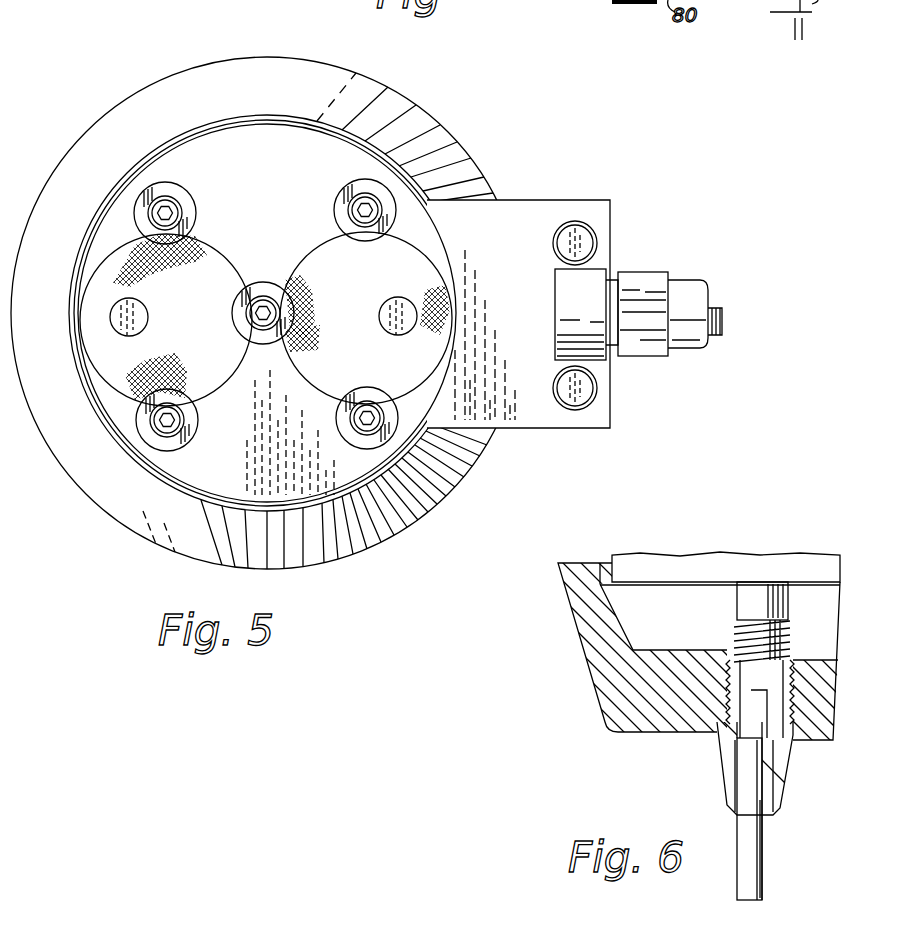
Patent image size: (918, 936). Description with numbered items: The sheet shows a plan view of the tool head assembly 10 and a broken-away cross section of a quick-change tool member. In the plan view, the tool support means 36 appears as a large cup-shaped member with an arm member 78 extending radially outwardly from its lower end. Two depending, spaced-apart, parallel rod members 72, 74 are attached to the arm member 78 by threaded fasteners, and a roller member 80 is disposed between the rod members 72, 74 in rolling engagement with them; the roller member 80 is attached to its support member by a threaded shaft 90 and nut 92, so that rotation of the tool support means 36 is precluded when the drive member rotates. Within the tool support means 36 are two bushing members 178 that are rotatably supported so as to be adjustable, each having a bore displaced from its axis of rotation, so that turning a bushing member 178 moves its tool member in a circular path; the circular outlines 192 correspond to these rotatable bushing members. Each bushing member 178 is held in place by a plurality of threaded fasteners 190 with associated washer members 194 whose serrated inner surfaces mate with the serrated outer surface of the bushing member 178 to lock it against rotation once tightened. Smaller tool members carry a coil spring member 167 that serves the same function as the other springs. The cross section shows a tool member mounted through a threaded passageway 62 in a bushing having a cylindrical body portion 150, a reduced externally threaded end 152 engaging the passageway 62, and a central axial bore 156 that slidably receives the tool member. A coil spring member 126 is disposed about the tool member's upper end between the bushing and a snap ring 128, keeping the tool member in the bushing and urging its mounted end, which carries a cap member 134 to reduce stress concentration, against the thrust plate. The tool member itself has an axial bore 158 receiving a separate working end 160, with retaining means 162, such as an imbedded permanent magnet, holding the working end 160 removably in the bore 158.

In FIG. 5, the tool head assembly 10 is at (205, 56).
In FIG. 5, the tool support means 36 is at (80, 130).
In FIG. 5, the arm member 78 is at (520, 228).
In FIG. 5, the rod member 72 is at (590, 242).
In FIG. 5, the rod member 74 is at (593, 400).
In FIG. 5, the roller member 80 is at (573, 296).
In FIG. 5, the nut 92 is at (698, 285).
In FIG. 5, the threaded shaft 90 is at (722, 312).
In FIG. 5, the threaded fasteners 190 is at (167, 212).
In FIG. 5, the washer members 194 is at (191, 212).
In FIG. 5, the circular opening 192 is at (203, 246).
In FIG. 5, the bushing members 178 is at (206, 395).
In FIG. 5, the coil spring member 167 is at (144, 325).
In FIG. 6, the cap member 134 is at (765, 578).
In FIG. 6, the snap ring 128 is at (738, 626).
In FIG. 6, the coil spring member 126 is at (738, 652).
In FIG. 6, the externally threaded end 152 is at (727, 706).
In FIG. 6, the passageway 62 is at (790, 698).
In FIG. 6, the cylindrical body portion 150 is at (727, 776).
In FIG. 6, the retaining means 162 is at (770, 728).
In FIG. 6, the central axial bore 156 is at (772, 770).
In FIG. 6, the axial bore 158 is at (765, 822).
In FIG. 6, the working end 160 is at (752, 862).